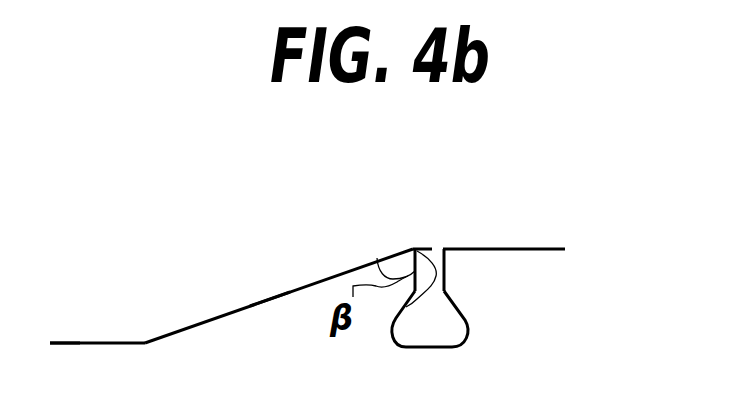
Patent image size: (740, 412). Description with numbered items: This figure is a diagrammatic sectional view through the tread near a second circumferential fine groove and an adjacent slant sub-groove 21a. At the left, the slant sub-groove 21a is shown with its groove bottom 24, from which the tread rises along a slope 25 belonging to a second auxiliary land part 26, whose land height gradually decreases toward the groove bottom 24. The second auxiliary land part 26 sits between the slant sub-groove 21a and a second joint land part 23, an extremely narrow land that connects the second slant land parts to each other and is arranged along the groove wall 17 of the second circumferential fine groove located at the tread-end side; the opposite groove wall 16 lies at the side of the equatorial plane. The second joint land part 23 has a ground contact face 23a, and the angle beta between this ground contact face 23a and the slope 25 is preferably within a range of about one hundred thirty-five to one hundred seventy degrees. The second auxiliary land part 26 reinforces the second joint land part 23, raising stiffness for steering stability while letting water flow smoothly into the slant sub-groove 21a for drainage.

The groove wall 16 is at (442, 285).
The groove wall 17 is at (407, 306).
The slant sub-groove 21a is at (76, 341).
The second joint land part 23 is at (415, 248).
The ground contact face 23a is at (413, 249).
The groove bottom 24 is at (107, 343).
The slope 25 is at (200, 323).
The second auxiliary land part 26 is at (271, 297).